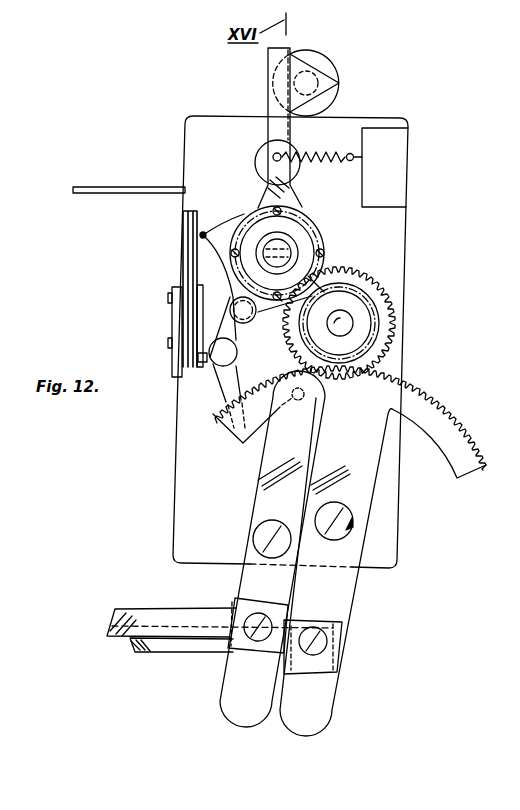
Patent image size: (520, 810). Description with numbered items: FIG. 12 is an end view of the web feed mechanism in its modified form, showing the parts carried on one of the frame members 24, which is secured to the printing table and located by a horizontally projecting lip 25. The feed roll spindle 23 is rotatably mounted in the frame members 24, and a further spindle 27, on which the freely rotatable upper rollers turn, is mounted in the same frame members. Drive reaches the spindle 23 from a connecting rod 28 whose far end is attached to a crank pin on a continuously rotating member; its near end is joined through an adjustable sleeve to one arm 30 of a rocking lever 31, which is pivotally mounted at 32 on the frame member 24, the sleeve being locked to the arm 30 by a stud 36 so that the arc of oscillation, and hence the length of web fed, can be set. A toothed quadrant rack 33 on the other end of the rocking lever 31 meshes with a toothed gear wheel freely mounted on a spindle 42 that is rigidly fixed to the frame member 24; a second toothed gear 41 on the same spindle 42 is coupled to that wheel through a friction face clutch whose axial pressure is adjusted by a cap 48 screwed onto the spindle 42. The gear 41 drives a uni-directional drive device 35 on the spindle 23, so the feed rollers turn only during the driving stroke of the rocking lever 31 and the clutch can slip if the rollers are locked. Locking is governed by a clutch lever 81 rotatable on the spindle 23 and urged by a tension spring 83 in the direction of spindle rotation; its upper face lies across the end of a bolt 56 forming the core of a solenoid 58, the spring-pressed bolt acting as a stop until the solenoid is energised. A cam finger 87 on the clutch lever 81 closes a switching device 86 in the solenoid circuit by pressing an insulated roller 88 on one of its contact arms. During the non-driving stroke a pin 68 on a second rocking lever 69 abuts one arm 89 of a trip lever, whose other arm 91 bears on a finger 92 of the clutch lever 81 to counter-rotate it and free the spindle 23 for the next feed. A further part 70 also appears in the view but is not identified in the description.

The solenoid 58 is at (339, 69).
The bolt 56 is at (300, 87).
The frame members 24 is at (197, 124).
The spindle 27 is at (256, 160).
The tension spring 83 is at (341, 151).
The clutch lever 81 is at (264, 191).
The horizontally projecting lip 25 is at (110, 197).
The insulated roller 88 is at (205, 232).
The cam finger 87 is at (203, 236).
The switching device 86 is at (187, 267).
The other arm 91 is at (225, 323).
The finger 92 is at (247, 322).
The spindle 23 is at (288, 242).
The uni-directional drive device 35 is at (322, 244).
The toothed gear 41 is at (393, 298).
The spindle 42 is at (350, 323).
The cap 48 is at (378, 343).
The toothed quadrant rack 33 is at (432, 412).
The pin 68 is at (296, 401).
The arm 89 is at (243, 443).
The pivot 32 is at (353, 520).
The rocking lever 31 is at (337, 585).
The stud 36 is at (322, 643).
The arm 30 is at (317, 690).
The second rocking lever 69 is at (233, 697).
The slide bar 70 is at (137, 617).
The connecting rod 28 is at (157, 653).